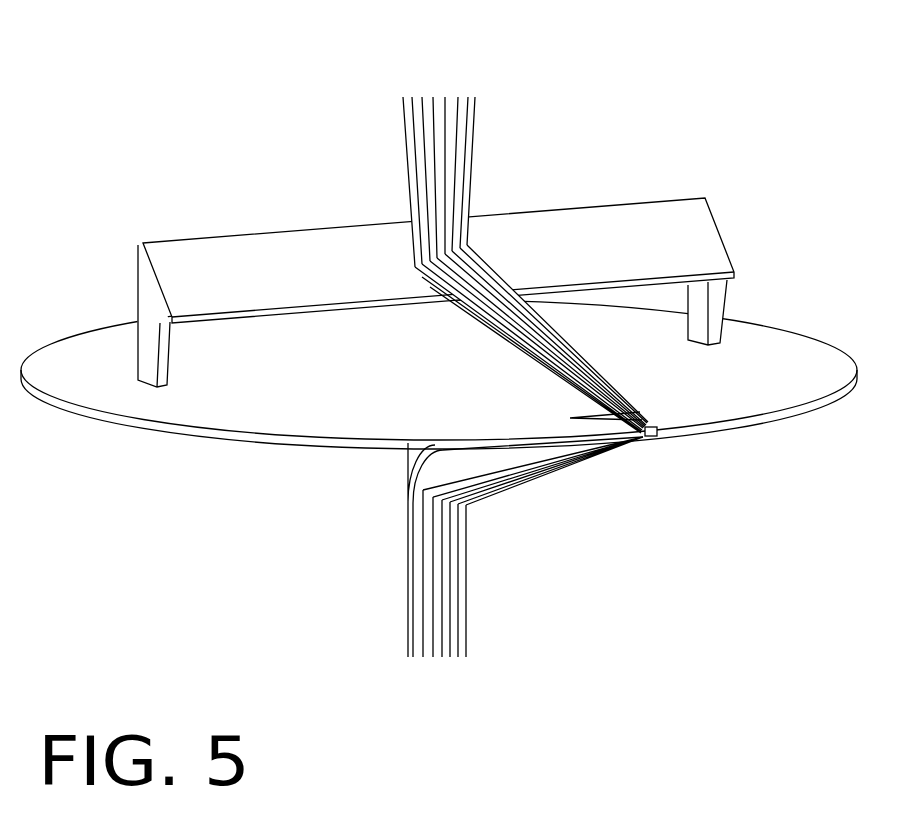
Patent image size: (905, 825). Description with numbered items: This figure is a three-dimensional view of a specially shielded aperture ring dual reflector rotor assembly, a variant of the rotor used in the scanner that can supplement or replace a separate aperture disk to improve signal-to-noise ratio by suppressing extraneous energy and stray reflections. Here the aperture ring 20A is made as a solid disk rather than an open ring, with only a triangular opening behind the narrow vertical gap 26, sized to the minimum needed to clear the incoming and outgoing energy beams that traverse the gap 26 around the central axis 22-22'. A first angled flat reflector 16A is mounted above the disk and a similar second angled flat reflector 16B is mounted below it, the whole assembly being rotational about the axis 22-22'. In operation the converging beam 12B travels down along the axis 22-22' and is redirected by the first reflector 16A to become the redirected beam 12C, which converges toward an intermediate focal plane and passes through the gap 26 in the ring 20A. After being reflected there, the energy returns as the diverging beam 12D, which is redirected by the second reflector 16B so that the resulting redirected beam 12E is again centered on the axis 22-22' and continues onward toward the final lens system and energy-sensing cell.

The converging beam 12B is at (468, 128).
The redirected beam 12C is at (483, 268).
The diverging beam 12D is at (570, 463).
The redirected beam 12E is at (408, 630).
The first angled flat reflector 16A is at (332, 240).
The second angled flat reflector 16B is at (407, 483).
The aperture ring 20A is at (748, 424).
The axis 22 is at (440, 46).
The axis 22' is at (438, 718).
The narrow vertical gap 26 is at (659, 440).